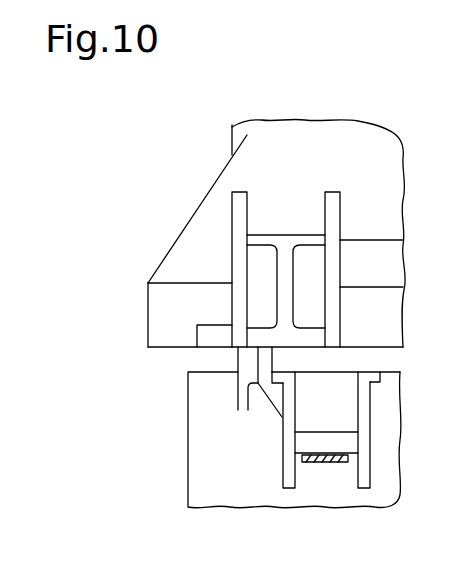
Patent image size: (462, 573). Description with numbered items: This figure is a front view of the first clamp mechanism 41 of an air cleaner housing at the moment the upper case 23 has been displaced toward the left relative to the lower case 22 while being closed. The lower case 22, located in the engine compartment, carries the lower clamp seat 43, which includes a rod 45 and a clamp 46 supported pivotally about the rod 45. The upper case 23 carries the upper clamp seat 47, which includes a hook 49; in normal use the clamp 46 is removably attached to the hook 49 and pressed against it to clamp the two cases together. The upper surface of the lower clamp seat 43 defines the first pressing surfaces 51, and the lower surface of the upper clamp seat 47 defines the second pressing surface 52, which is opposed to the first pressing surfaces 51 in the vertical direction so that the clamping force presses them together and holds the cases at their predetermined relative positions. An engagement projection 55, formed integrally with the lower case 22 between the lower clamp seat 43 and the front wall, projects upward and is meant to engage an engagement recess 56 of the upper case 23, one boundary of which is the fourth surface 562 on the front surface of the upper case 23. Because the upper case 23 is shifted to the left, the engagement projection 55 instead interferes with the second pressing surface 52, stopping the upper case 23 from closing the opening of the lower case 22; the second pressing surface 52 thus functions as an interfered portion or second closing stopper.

The lower case 22 is at (188, 446).
The upper case 23 is at (233, 131).
The first clamp mechanism 41 is at (340, 228).
The lower clamp seat 43 is at (372, 468).
The rod 45 is at (347, 440).
The clamp 46 is at (327, 463).
The upper clamp seat 47 is at (334, 199).
The hook 49 is at (268, 236).
The first pressing surfaces 51 is at (370, 367).
The second pressing surface 52 is at (323, 347).
The engagement projection 55 is at (246, 360).
The engagement recess 56 is at (208, 323).
The fourth surface 562 is at (208, 339).